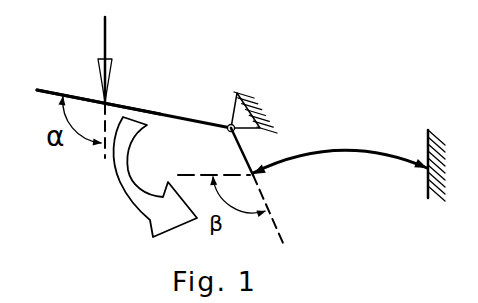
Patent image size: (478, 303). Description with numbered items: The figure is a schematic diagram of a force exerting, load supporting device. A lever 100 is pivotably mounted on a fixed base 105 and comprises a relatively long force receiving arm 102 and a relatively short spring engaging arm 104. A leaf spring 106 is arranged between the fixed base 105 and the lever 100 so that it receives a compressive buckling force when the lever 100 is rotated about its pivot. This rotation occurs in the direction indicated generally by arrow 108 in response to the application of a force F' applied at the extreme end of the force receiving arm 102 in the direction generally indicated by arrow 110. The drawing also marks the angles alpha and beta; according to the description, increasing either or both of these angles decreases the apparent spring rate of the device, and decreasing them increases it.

The lever 100 is at (182, 112).
The force receiving arm 102 is at (128, 106).
The spring engaging arm 104 is at (246, 159).
The fixed base 105 is at (262, 111).
The leaf spring 106 is at (367, 151).
The arrow indicating direction of rotation 108 is at (135, 205).
The arrow indicating direction of force 110 is at (107, 41).